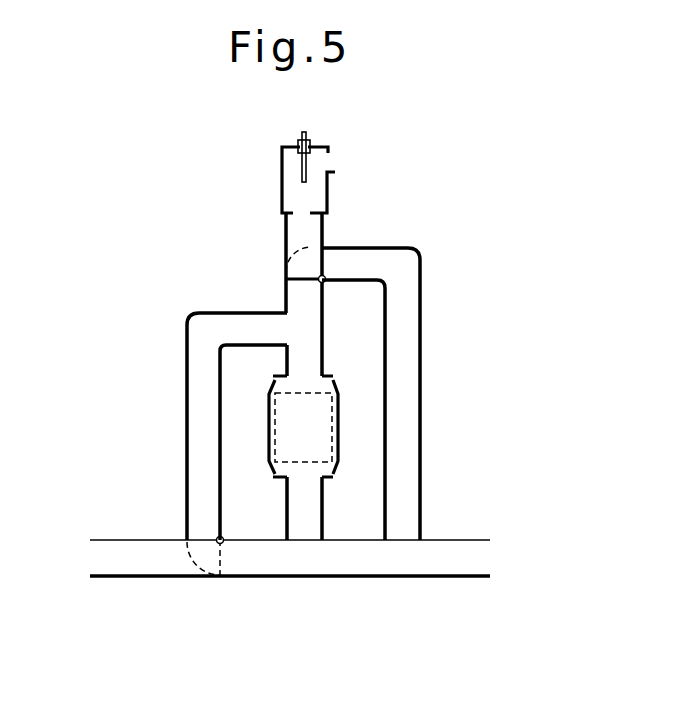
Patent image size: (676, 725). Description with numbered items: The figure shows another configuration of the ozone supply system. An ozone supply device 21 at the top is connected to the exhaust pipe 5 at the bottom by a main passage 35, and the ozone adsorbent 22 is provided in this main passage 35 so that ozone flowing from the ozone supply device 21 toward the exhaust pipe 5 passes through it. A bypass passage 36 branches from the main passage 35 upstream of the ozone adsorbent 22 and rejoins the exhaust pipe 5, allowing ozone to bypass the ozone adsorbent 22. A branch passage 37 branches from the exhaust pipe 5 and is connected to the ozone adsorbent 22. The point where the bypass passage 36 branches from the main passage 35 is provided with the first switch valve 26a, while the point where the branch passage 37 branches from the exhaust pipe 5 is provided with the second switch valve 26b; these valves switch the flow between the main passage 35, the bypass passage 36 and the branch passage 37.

The exhaust pipe 5 is at (373, 578).
The ozone supply device 21 is at (324, 146).
The ozone adsorbent 22 is at (320, 420).
The first switch valve 26a is at (303, 281).
The second switch valve 26b is at (207, 539).
The main passage 35 is at (285, 233).
The bypass passage 36 is at (422, 410).
The branch passage 37 is at (187, 396).